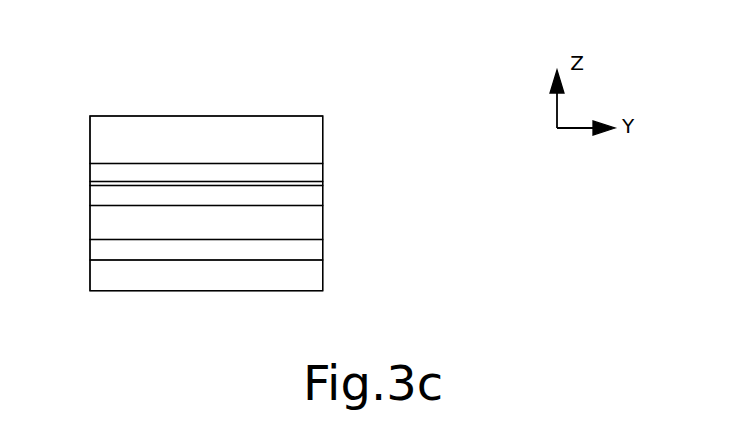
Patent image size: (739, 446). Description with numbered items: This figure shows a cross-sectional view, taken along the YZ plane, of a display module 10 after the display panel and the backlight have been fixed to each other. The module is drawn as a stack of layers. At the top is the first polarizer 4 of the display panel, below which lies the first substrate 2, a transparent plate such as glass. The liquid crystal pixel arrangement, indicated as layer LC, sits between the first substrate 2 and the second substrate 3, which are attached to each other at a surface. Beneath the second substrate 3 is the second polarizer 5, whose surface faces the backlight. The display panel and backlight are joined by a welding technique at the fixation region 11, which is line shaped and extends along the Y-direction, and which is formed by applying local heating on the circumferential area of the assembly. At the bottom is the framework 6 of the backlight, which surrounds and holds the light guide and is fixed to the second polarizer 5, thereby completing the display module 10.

The display module 10 is at (233, 72).
The first polarizer 4 is at (199, 152).
The first substrate 2 is at (308, 172).
The liquid crystal pixel arrangement layer LC is at (90, 186).
The second substrate 3 is at (312, 194).
The second polarizer 5 is at (199, 236).
The fixation region 11 is at (305, 255).
The framework 6 is at (305, 281).